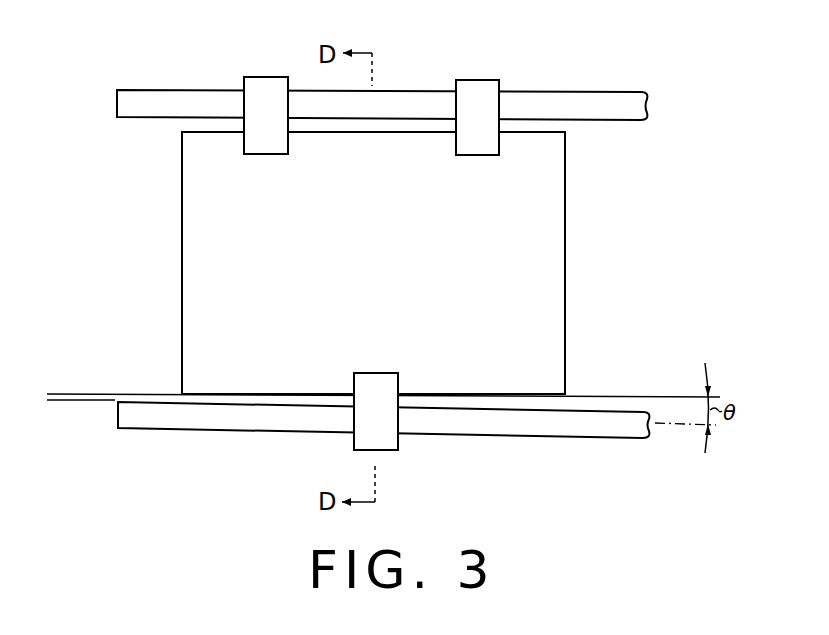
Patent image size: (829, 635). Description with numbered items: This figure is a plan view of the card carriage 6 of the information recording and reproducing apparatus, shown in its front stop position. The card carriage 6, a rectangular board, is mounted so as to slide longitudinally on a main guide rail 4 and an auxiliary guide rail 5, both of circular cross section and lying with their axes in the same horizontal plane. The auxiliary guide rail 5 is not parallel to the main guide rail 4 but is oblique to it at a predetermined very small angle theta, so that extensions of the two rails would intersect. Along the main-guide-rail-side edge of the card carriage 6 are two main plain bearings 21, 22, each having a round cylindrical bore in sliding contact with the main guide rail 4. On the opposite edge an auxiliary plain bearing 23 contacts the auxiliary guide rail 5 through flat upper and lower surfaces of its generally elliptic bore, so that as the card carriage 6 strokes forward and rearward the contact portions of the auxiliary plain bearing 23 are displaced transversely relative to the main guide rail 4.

The main guide rail 4 is at (622, 100).
The auxiliary guide rail 5 is at (623, 415).
The card carriage 6 is at (190, 284).
The main plain bearing 21 is at (263, 83).
The main plain bearing 22 is at (483, 88).
The auxiliary plain bearing 23 is at (385, 434).